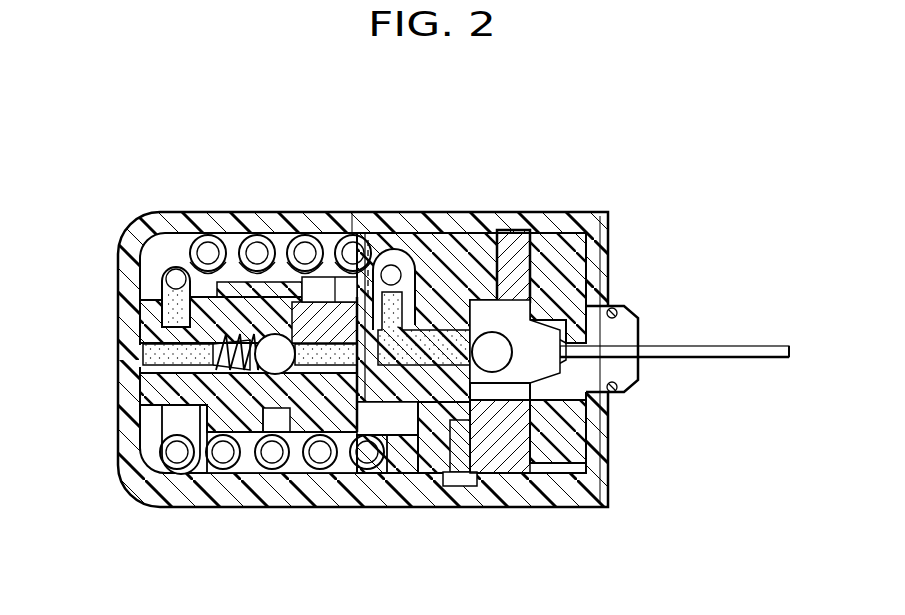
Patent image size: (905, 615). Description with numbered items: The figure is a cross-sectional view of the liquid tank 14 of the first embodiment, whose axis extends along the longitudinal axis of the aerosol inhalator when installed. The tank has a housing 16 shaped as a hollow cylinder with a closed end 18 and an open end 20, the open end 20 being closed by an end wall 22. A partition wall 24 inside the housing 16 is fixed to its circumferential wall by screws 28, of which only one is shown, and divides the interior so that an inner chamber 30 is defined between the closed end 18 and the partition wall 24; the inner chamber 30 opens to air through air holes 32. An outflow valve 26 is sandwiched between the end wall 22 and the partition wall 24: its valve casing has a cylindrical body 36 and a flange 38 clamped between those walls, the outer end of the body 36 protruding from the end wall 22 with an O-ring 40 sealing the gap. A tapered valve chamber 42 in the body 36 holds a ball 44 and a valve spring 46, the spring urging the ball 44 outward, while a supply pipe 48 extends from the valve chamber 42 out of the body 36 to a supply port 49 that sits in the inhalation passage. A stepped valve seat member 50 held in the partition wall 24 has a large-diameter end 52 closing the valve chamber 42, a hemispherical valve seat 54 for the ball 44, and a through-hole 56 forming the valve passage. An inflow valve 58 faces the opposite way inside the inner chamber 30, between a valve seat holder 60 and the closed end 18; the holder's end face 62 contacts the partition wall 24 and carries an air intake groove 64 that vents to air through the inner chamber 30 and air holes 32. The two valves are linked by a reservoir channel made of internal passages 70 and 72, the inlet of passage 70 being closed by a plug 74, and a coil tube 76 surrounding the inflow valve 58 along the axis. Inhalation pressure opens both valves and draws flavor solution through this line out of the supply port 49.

The liquid tank 14 is at (632, 168).
The housing 16 is at (352, 212).
The closed end 18 is at (128, 298).
The open end 20 is at (612, 236).
The end wall 22 is at (606, 262).
The partition wall 24 is at (485, 230).
The outflow valve 26 is at (650, 398).
The screws 28 is at (458, 487).
The inner chamber 30 is at (400, 473).
The air holes 32 is at (407, 235).
The body 36 is at (560, 235).
The flange 38 is at (528, 485).
The O-ring 40 is at (620, 310).
The valve chamber 42 is at (525, 235).
The ball 44 is at (268, 374).
The valve spring 46 is at (150, 375).
The supply pipe 48 is at (755, 345).
The supply port 49 is at (790, 358).
The valve seat member 50 is at (320, 300).
The large-diameter end 52 is at (500, 330).
The valve seat 54 is at (498, 470).
The through-hole 56 is at (460, 300).
The inflow valve 58 is at (190, 405).
The valve seat holder 60 is at (310, 420).
The end face 62 is at (368, 440).
The air intake groove 64 is at (342, 440).
The internal passage 70 is at (160, 345).
The internal passage 72 is at (428, 300).
The plug 74 is at (150, 357).
The coil tube 76 is at (213, 238).